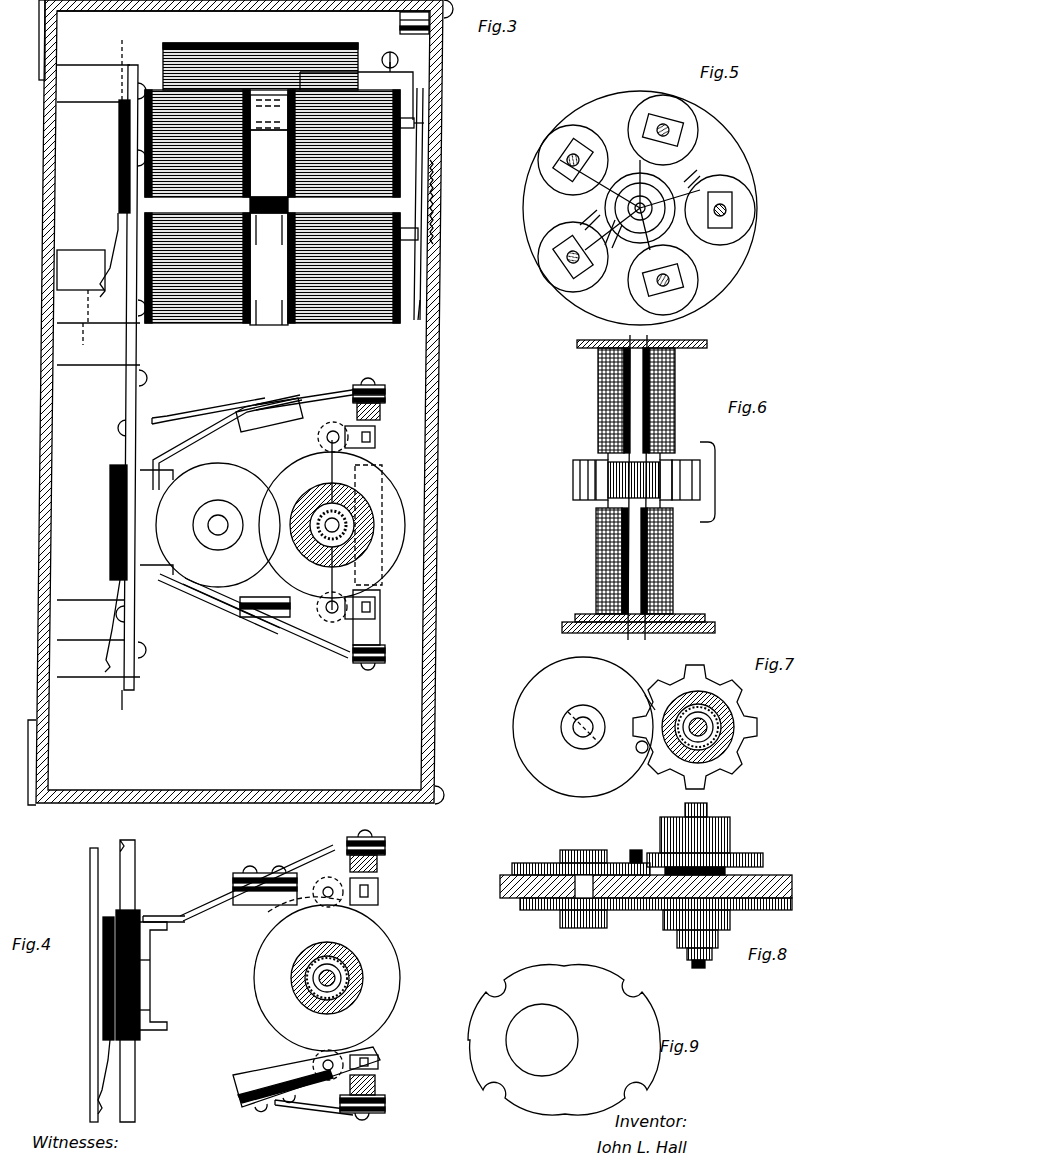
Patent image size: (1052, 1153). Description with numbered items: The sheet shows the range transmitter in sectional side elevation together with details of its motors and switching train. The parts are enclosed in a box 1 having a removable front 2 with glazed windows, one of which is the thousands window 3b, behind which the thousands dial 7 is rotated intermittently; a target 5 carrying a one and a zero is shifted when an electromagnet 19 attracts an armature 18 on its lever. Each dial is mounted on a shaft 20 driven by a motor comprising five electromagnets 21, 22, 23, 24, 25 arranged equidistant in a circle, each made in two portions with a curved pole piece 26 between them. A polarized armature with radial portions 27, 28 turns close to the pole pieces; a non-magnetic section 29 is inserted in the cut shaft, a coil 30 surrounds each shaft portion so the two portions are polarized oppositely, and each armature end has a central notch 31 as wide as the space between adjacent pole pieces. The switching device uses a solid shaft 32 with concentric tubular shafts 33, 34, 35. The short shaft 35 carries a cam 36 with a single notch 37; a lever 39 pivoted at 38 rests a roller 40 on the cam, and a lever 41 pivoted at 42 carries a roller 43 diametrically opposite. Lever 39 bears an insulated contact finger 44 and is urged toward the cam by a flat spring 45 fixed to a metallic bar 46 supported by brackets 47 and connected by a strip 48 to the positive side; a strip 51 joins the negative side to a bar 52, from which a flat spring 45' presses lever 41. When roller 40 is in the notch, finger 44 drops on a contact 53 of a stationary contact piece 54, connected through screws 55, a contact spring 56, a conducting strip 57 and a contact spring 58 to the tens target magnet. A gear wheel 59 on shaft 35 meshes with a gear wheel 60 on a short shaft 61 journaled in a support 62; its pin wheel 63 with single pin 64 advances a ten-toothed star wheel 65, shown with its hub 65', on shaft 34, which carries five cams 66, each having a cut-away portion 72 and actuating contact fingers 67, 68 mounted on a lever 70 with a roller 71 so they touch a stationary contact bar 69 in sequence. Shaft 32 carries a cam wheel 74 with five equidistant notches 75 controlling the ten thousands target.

In FIG. 3, the box 1 is at (50, 765).
In FIG. 3, the removable front 2 is at (437, 362).
In FIG. 3, the thousands window 3b is at (436, 206).
In FIG. 3, the target 5 is at (426, 156).
In FIG. 3, the thousands dial 7 is at (421, 306).
In FIG. 3, the armature 18 is at (414, 128).
In FIG. 3, the electromagnet 19 is at (288, 45).
In FIG. 3, the shaft 20 is at (418, 237).
In FIG. 5, the shaft 20 is at (735, 262).
In FIG. 6, the shaft 20 is at (620, 455).
In FIG. 3, the electromagnet 21 is at (290, 112).
In FIG. 5, the electromagnet 21 is at (685, 112).
In FIG. 5, the electromagnet 22 is at (745, 207).
In FIG. 3, the electromagnet 23 is at (225, 325).
In FIG. 5, the electromagnet 23 is at (678, 310).
In FIG. 5, the electromagnet 24 is at (550, 272).
In FIG. 5, the electromagnet 25 is at (556, 142).
In FIG. 3, the curved pole piece 26 is at (269, 227).
In FIG. 5, the curved pole piece 26 is at (641, 202).
In FIG. 5, the radial armature portion 27 is at (636, 182).
In FIG. 6, the radial armature portion 27 is at (573, 473).
In FIG. 5, the radial armature portion 28 is at (612, 222).
In FIG. 6, the radial armature portion 28 is at (716, 504).
In FIG. 6, the non-magnetic section 29 is at (608, 490).
In FIG. 5, the coil 30 is at (632, 232).
In FIG. 6, the coil 30 is at (598, 380).
In FIG. 5, the central notch 31 is at (700, 168).
In FIG. 6, the central notch 31 is at (573, 490).
In FIG. 3, the solid shaft 32 is at (350, 520).
In FIG. 4, the solid shaft 32 is at (320, 976).
In FIG. 7, the solid shaft 32 is at (707, 733).
In FIG. 8, the solid shaft 32 is at (704, 965).
In FIG. 4, the tubular shaft 33 is at (314, 988).
In FIG. 7, the tubular shaft 33 is at (714, 718).
In FIG. 8, the tubular shaft 33 is at (690, 955).
In FIG. 4, the tubular shaft 34 is at (345, 990).
In FIG. 7, the tubular shaft 34 is at (720, 705).
In FIG. 8, the tubular shaft 34 is at (677, 940).
In FIG. 4, the tubular shaft 35 is at (348, 962).
In FIG. 8, the tubular shaft 35 is at (730, 922).
In FIG. 4, the cam 36 is at (385, 968).
In FIG. 4, the notch 37 is at (268, 918).
In FIG. 4, the pivot 38 is at (379, 891).
In FIG. 4, the lever 39 is at (232, 905).
In FIG. 4, the roller 40 is at (328, 878).
In FIG. 4, the lever 41 is at (248, 1078).
In FIG. 4, the pivot 42 is at (378, 1063).
In FIG. 4, the roller 43 is at (325, 1085).
In FIG. 4, the contact finger 44 is at (166, 912).
In FIG. 3, the flat spring 45 is at (320, 386).
In FIG. 4, the flat spring 45 is at (257, 873).
In FIG. 3, the flat spring 45' is at (266, 635).
In FIG. 4, the flat spring 45' is at (314, 1126).
In FIG. 3, the metallic bar 46 is at (388, 390).
In FIG. 4, the metallic bar 46 is at (386, 846).
In FIG. 3, the bracket 47 is at (380, 414).
In FIG. 4, the bracket 47 is at (378, 864).
In FIG. 3, the metal strip 48 is at (215, 433).
In FIG. 3, the strip 51 is at (225, 648).
In FIG. 3, the bar 52 is at (386, 655).
In FIG. 4, the bar 52 is at (386, 1108).
In FIG. 4, the contact 53 is at (150, 950).
In FIG. 4, the stationary contact piece 54 is at (150, 984).
In FIG. 4, the screws 55 is at (152, 1010).
In FIG. 4, the contact spring 56 is at (104, 1064).
In FIG. 4, the conducting strip 57 is at (90, 872).
In FIG. 3, the contact spring 58 is at (118, 228).
In FIG. 8, the gear wheel 59 is at (658, 912).
In FIG. 8, the gear wheel 60 is at (545, 912).
In FIG. 7, the short shaft 61 is at (573, 726).
In FIG. 8, the short shaft 61 is at (582, 850).
In FIG. 8, the support 62 is at (500, 884).
In FIG. 7, the pin wheel 63 is at (552, 765).
In FIG. 8, the pin wheel 63 is at (524, 863).
In FIG. 7, the pin 64 is at (637, 751).
In FIG. 8, the pin 64 is at (636, 850).
In FIG. 7, the star wheel 65 is at (700, 733).
In FIG. 8, the star wheel 65 is at (721, 851).
In FIG. 7, the gear hub 65' is at (647, 677).
In FIG. 8, the gear hub 65' is at (715, 828).
In FIG. 3, the cam 66 is at (398, 512).
In FIG. 3, the contact finger 67 is at (170, 418).
In FIG. 3, the contact finger 68 is at (190, 600).
In FIG. 3, the stationary contact bar 69 is at (172, 480).
In FIG. 3, the lever 70 is at (265, 425).
In FIG. 3, the roller 71 is at (376, 436).
In FIG. 3, the cut-away portion 72 is at (365, 592).
In FIG. 9, the cam wheel 74 is at (530, 1040).
In FIG. 9, the notches 75 is at (564, 1037).